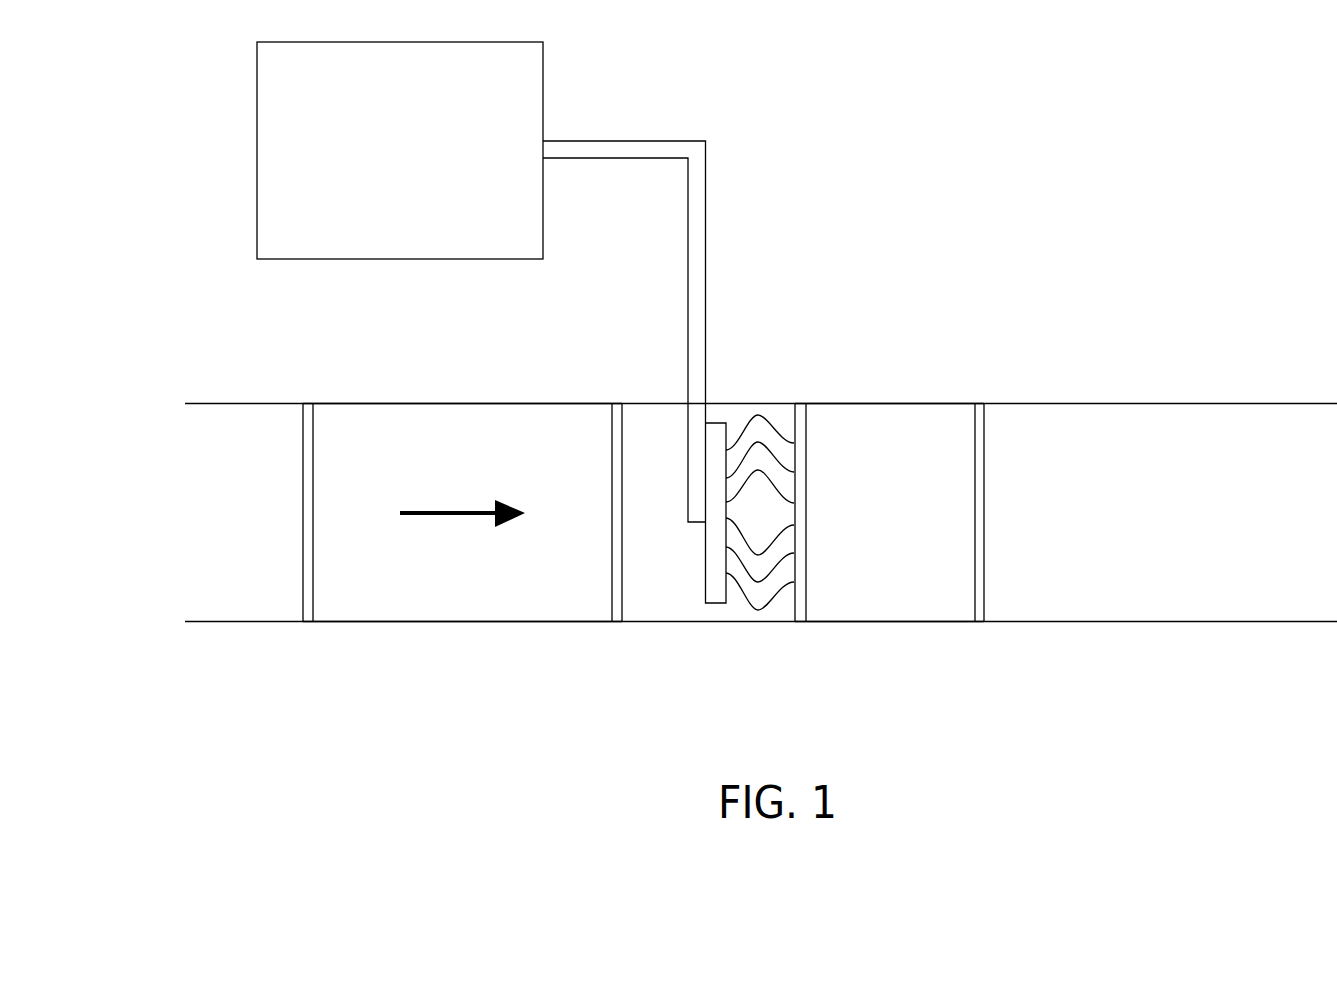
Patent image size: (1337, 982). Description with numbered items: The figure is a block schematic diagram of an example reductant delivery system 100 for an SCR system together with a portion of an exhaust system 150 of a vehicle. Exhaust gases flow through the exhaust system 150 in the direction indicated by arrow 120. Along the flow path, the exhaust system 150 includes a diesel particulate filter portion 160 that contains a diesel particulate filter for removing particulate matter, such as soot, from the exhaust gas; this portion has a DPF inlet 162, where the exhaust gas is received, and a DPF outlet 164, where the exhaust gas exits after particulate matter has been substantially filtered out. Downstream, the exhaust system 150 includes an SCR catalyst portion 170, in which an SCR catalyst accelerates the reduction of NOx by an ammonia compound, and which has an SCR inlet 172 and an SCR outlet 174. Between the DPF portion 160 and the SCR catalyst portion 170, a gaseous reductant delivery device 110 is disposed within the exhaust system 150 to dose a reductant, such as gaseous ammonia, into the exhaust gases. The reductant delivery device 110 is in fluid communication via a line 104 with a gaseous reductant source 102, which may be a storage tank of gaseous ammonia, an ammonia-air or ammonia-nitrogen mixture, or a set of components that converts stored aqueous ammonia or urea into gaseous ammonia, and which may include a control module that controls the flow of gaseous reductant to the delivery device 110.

The reductant delivery system 100 is at (960, 200).
The gaseous reductant source 102 is at (543, 87).
The line 104 is at (703, 140).
The gaseous reductant delivery device 110 is at (726, 442).
The arrow 120 is at (460, 517).
The exhaust system 150 is at (1105, 348).
The diesel particulate filter portion 160 is at (491, 385).
The DPF inlet 162 is at (313, 423).
The DPF outlet 164 is at (610, 418).
The SCR catalyst portion 170 is at (902, 365).
The SCR inlet 172 is at (807, 423).
The SCR outlet 174 is at (973, 423).